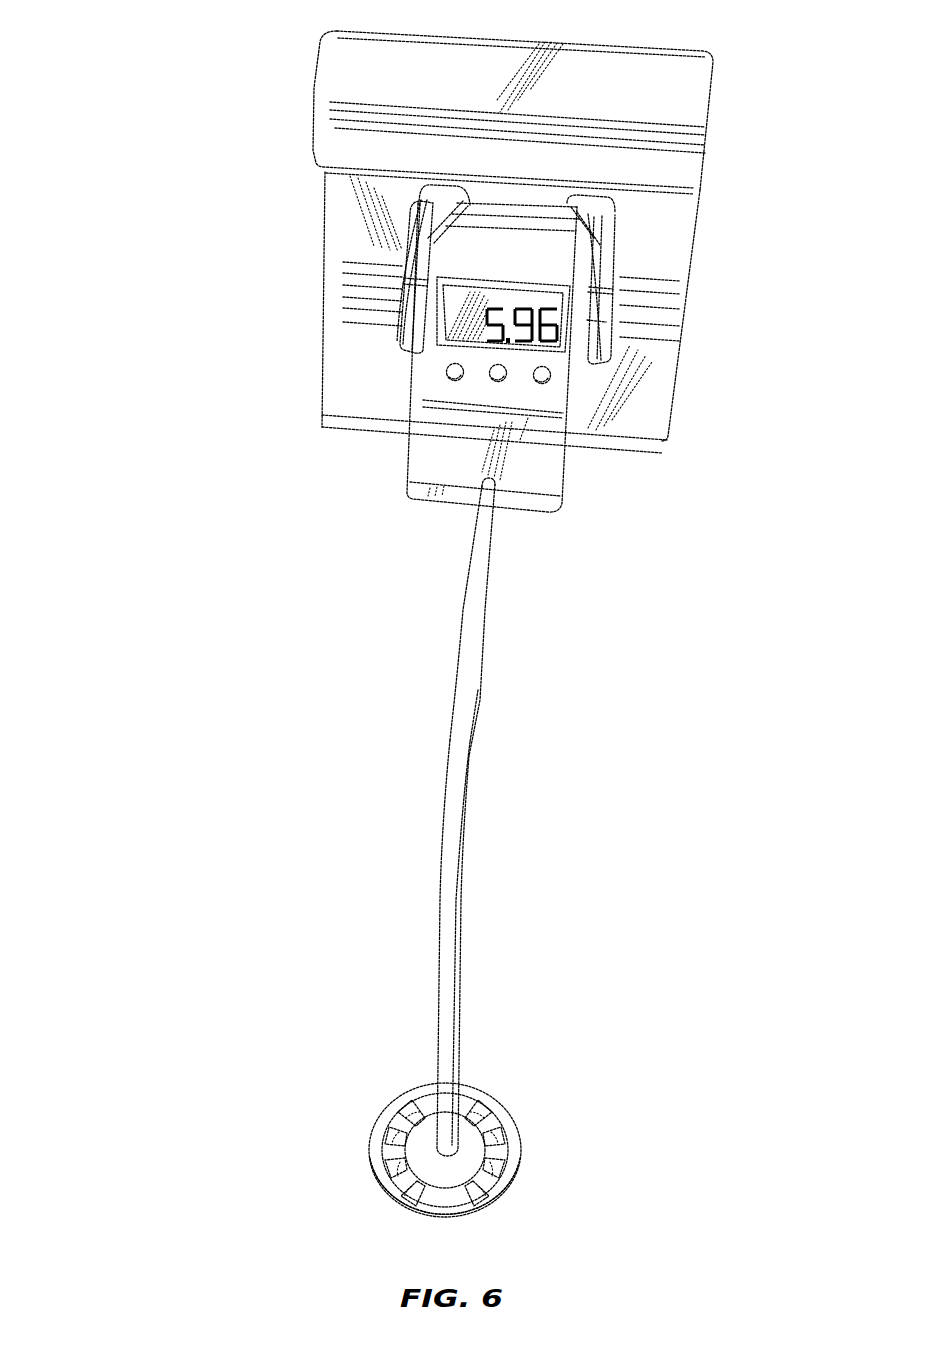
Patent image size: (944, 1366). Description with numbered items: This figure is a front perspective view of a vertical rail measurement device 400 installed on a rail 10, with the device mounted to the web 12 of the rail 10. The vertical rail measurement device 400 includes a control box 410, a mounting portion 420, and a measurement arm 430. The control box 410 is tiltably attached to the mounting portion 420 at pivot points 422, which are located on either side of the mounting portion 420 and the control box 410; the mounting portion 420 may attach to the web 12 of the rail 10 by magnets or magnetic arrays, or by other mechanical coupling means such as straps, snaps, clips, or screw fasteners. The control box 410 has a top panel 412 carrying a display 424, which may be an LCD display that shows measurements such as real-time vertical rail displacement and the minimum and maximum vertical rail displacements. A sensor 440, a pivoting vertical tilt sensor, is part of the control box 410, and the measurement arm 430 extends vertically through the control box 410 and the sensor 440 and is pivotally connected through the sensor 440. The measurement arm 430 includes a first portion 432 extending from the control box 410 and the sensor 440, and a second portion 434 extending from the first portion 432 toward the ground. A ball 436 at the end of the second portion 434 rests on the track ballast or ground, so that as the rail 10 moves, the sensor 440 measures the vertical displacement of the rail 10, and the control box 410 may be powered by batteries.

The rail 10 is at (340, 142).
The web 12 is at (650, 270).
The vertical rail measurement device 400 is at (238, 587).
The control box 410 is at (540, 460).
The top panel 412 is at (480, 432).
The mounting portion 420 is at (598, 220).
The pivot points 422 is at (420, 297).
The display 424 is at (467, 327).
The measurement arm 430 is at (499, 820).
The first portion 432 is at (482, 618).
The second portion 434 is at (448, 988).
The ball 436 is at (502, 1152).
The sensor 440 is at (485, 483).